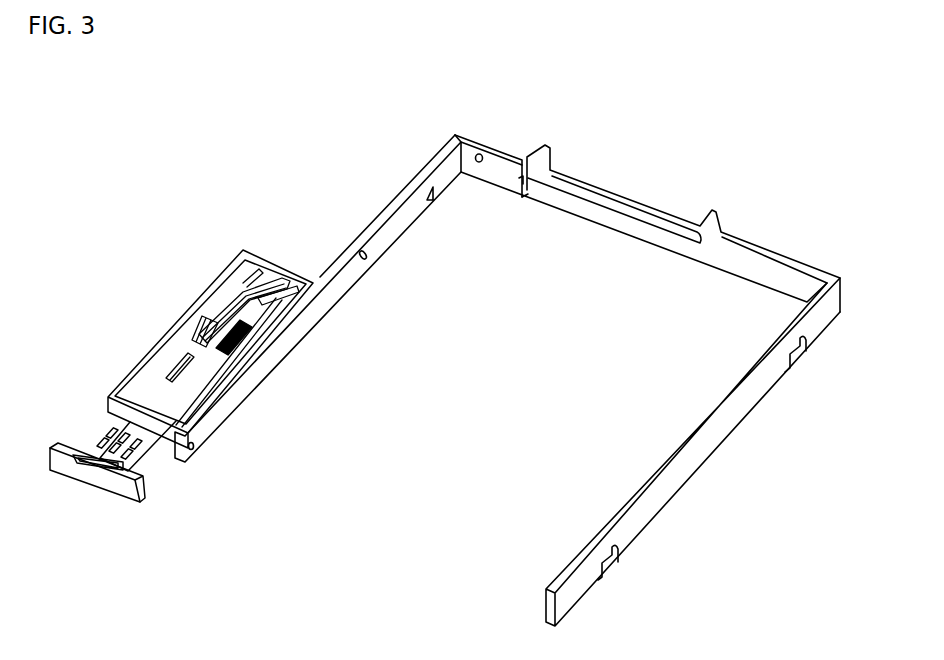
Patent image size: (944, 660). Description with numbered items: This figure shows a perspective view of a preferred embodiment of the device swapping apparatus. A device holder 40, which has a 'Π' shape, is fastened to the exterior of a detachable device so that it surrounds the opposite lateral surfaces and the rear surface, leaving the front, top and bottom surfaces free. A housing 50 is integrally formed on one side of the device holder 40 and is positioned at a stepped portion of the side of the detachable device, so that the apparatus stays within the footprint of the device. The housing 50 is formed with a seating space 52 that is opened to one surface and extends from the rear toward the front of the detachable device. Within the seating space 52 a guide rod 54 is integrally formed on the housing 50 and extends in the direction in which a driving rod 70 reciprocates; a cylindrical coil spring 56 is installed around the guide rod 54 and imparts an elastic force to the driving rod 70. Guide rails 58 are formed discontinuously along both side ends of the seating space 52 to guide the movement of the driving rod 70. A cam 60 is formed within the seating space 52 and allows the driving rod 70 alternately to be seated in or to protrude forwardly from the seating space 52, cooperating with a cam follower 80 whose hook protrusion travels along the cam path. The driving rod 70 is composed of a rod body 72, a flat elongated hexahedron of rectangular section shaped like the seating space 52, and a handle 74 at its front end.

The device holder 40 is at (397, 206).
The housing 50 is at (168, 350).
The seating space 52 is at (233, 307).
The guide rod 54 is at (270, 308).
The spring 56 is at (247, 343).
The guide rails 58 is at (225, 372).
The cam 60 is at (241, 276).
The driving rod 70 is at (76, 492).
The rod body 72 is at (167, 390).
The handle 74 is at (122, 489).
The cam follower 80 is at (225, 327).